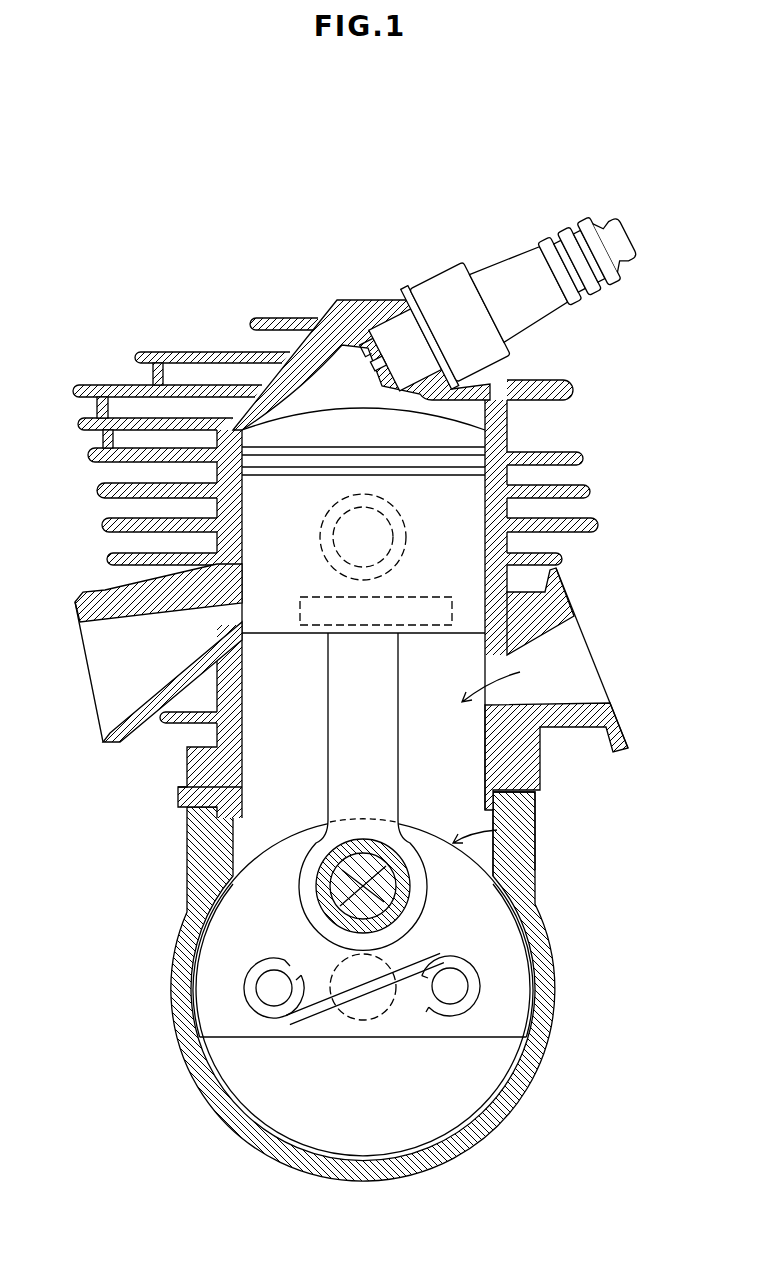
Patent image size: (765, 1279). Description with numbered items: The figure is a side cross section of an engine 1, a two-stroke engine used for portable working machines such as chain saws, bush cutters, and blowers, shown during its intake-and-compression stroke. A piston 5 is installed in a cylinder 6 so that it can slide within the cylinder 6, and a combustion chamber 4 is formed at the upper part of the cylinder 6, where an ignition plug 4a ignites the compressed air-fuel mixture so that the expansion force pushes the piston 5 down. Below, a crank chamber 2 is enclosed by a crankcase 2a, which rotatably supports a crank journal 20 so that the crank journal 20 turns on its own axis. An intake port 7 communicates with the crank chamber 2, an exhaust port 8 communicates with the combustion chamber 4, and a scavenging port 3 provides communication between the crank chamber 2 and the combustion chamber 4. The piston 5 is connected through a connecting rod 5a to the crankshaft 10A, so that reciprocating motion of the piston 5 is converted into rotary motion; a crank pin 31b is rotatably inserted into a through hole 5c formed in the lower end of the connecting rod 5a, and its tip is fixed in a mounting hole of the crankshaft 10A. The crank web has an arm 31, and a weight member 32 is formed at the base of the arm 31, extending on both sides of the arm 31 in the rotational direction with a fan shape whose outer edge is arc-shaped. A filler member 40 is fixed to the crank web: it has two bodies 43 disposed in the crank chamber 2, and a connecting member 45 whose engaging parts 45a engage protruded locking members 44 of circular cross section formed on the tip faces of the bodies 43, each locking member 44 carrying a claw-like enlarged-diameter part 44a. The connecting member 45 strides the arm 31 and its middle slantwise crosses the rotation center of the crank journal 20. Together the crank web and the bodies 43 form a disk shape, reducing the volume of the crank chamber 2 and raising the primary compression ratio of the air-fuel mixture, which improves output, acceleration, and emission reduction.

The engine 1 is at (147, 216).
The crank chamber 2 is at (247, 847).
The crankcase 2a is at (528, 1072).
The scavenging port 3 is at (520, 547).
The combustion chamber 4 is at (333, 365).
The ignition plug 4a is at (450, 290).
The piston 5 is at (347, 426).
The connecting rod 5a is at (385, 772).
The through hole 5c is at (387, 882).
The cylinder 6 is at (536, 513).
The intake port 7 is at (568, 698).
The exhaust port 8 is at (143, 697).
The crankshaft 10A is at (268, 816).
The crank journal 20 is at (378, 1005).
The arm 31 is at (400, 943).
The crank pin 31b is at (515, 878).
The weight member 32 is at (257, 1083).
The filler member 40 is at (520, 834).
The body 43 is at (223, 933).
The locking member 44 is at (240, 1006).
The enlarged-diameter part 44a is at (265, 995).
The connecting member 45 is at (361, 1014).
The engaging part 45a is at (247, 968).